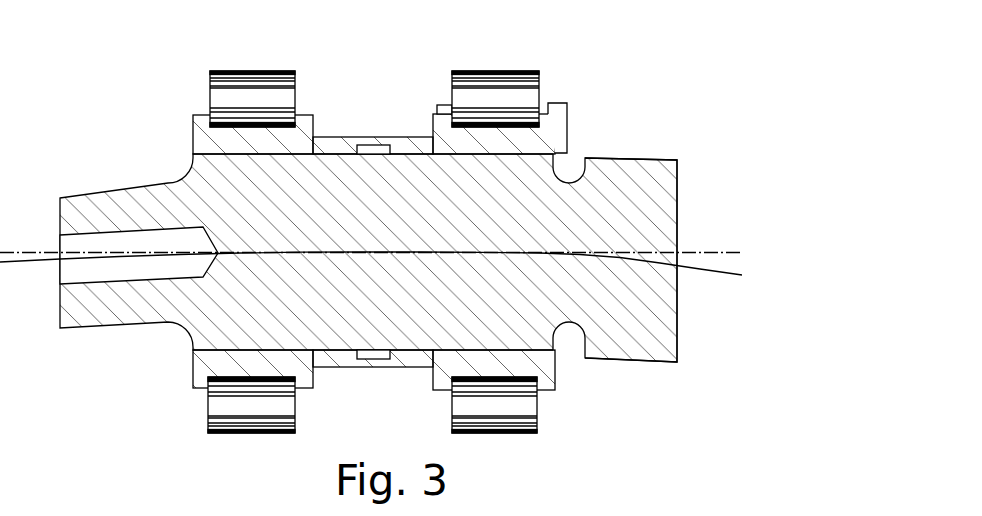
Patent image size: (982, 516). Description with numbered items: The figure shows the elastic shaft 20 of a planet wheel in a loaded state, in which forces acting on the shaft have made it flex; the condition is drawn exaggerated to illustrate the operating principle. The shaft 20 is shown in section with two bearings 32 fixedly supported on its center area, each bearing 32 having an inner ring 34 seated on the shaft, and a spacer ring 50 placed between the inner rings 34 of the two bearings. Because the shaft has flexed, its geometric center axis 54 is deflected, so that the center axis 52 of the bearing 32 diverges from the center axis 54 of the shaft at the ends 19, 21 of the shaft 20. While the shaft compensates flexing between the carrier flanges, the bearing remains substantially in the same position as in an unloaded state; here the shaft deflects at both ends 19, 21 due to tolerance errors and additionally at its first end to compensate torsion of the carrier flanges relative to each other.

The end of the shaft 19 is at (105, 362).
The shaft 20 is at (316, 284).
The end of the shaft 21 is at (642, 378).
The bearing 32 is at (597, 110).
The inner ring 34 is at (208, 129).
The spacer ring 50 is at (387, 142).
The center axis of the bearing 52 is at (687, 250).
The geometric center axis of the shaft 54 is at (700, 270).